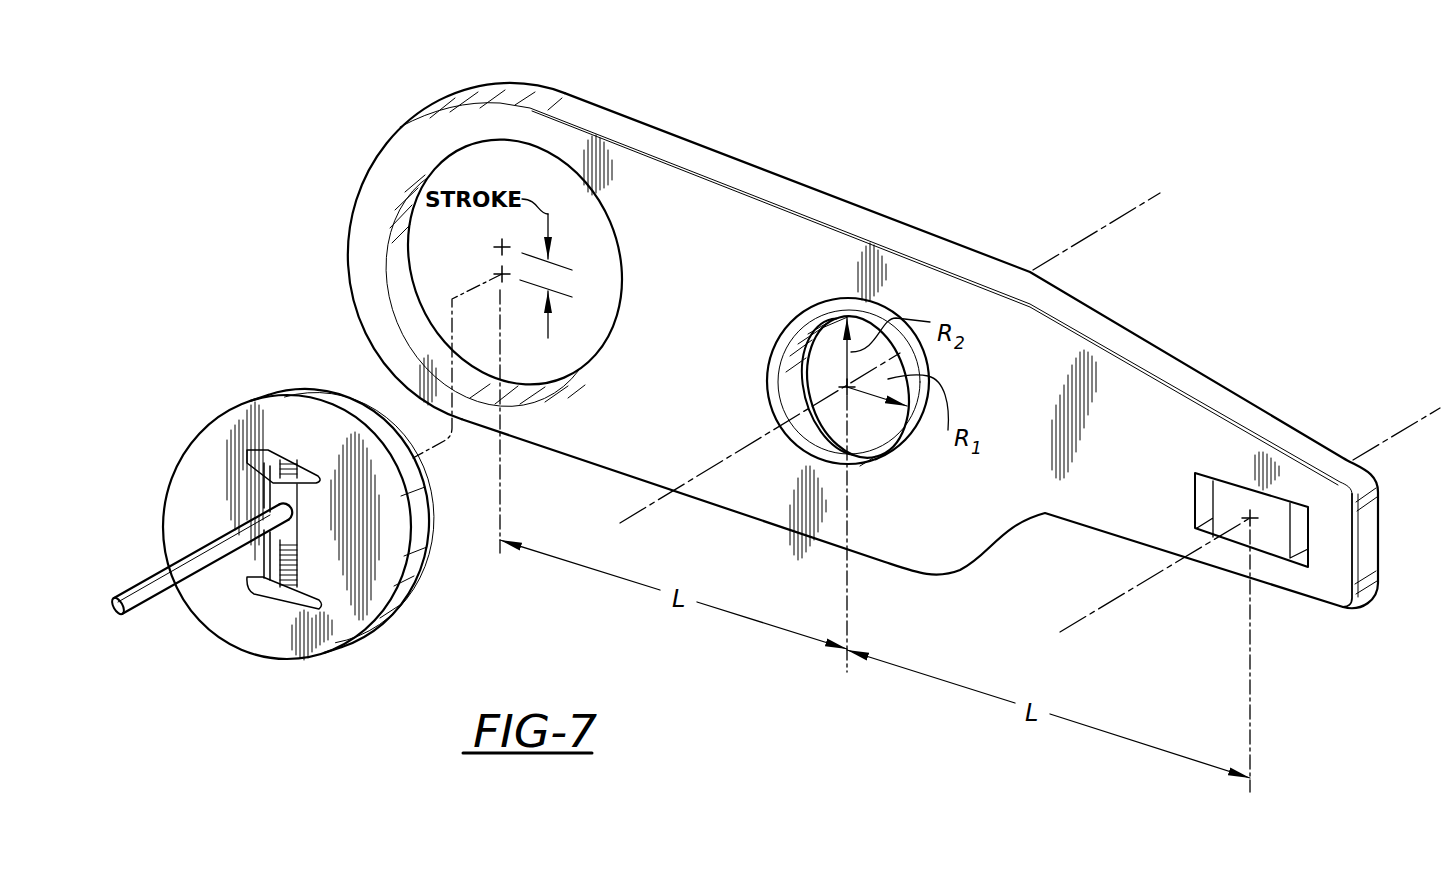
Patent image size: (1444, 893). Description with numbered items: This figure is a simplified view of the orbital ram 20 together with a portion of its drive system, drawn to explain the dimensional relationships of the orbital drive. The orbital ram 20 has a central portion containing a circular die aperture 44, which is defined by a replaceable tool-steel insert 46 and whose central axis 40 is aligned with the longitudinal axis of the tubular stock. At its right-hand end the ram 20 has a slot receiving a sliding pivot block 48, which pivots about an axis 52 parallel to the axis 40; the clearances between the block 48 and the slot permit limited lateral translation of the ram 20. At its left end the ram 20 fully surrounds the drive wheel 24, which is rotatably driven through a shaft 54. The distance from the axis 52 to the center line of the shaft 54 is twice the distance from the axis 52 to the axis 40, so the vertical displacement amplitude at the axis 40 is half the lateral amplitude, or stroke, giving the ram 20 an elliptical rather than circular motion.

The orbital ram 20 is at (805, 186).
The drive wheel 24 is at (227, 425).
The central axis 40 is at (690, 480).
The circular die aperture 44 is at (790, 390).
The replaceable tool-steel insert 46 is at (793, 320).
The pivot block 48 is at (1232, 500).
The axis 52 is at (1408, 428).
The shaft 54 is at (152, 577).